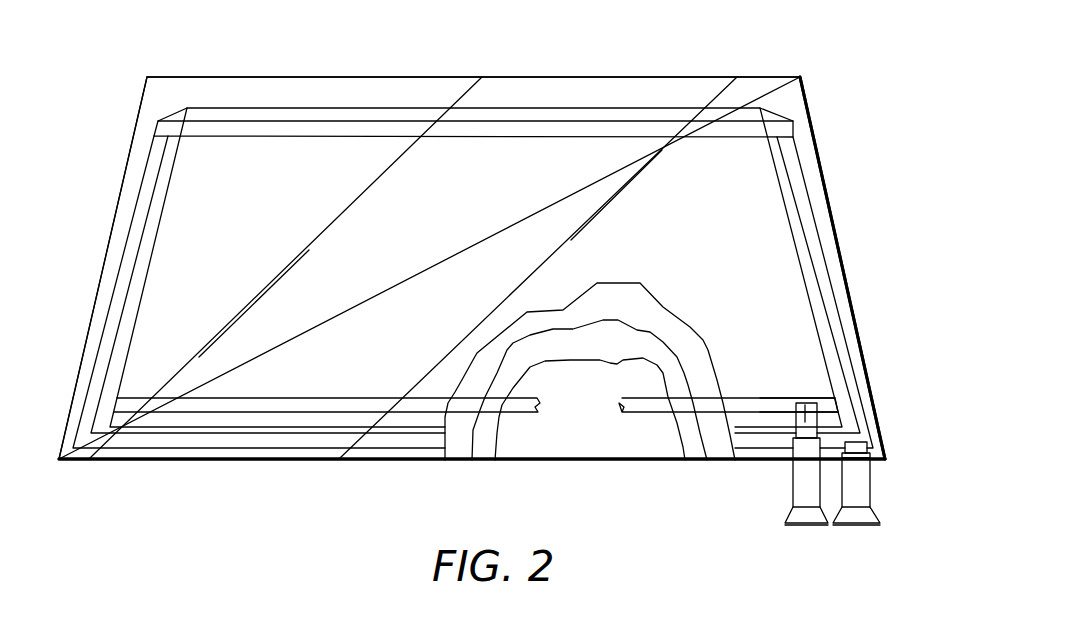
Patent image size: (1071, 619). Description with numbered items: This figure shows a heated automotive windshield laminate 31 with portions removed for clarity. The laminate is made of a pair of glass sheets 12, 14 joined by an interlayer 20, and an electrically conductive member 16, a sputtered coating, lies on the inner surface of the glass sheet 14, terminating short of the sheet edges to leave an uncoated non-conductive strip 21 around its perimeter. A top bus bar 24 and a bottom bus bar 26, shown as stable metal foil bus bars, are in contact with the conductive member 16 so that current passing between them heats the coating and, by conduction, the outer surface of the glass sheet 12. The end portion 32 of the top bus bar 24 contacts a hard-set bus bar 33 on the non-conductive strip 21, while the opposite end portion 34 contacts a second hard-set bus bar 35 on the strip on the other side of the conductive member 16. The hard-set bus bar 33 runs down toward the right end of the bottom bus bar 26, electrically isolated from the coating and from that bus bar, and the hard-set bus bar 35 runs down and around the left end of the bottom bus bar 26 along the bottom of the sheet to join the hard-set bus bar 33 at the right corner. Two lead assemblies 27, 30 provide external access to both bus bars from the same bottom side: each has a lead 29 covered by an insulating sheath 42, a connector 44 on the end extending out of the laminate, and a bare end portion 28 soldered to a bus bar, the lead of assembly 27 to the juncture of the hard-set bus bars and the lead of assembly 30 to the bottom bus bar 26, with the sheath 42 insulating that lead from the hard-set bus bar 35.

The glass sheet 12 is at (598, 437).
The glass sheet 14 is at (570, 92).
The electrically conductive member 16 is at (623, 312).
The interlayer 20 is at (623, 352).
The non-conductive strip 21 is at (130, 187).
The top bus bar 24 is at (470, 126).
The bottom bus bar 26 is at (522, 402).
The lead assembly 27 is at (832, 432).
The end portion of lead 28 is at (852, 442).
The lead 29 is at (805, 405).
The lead assembly 30 is at (783, 407).
The laminate 31 is at (823, 82).
The end portion of top bus bar 32 is at (778, 131).
The hard-set bus bar 33 is at (828, 292).
The opposite end portion of top bus bar 34 is at (165, 128).
The hard-set bus bar 35 is at (103, 343).
The sheath 42 is at (800, 485).
The connector 44 is at (803, 513).